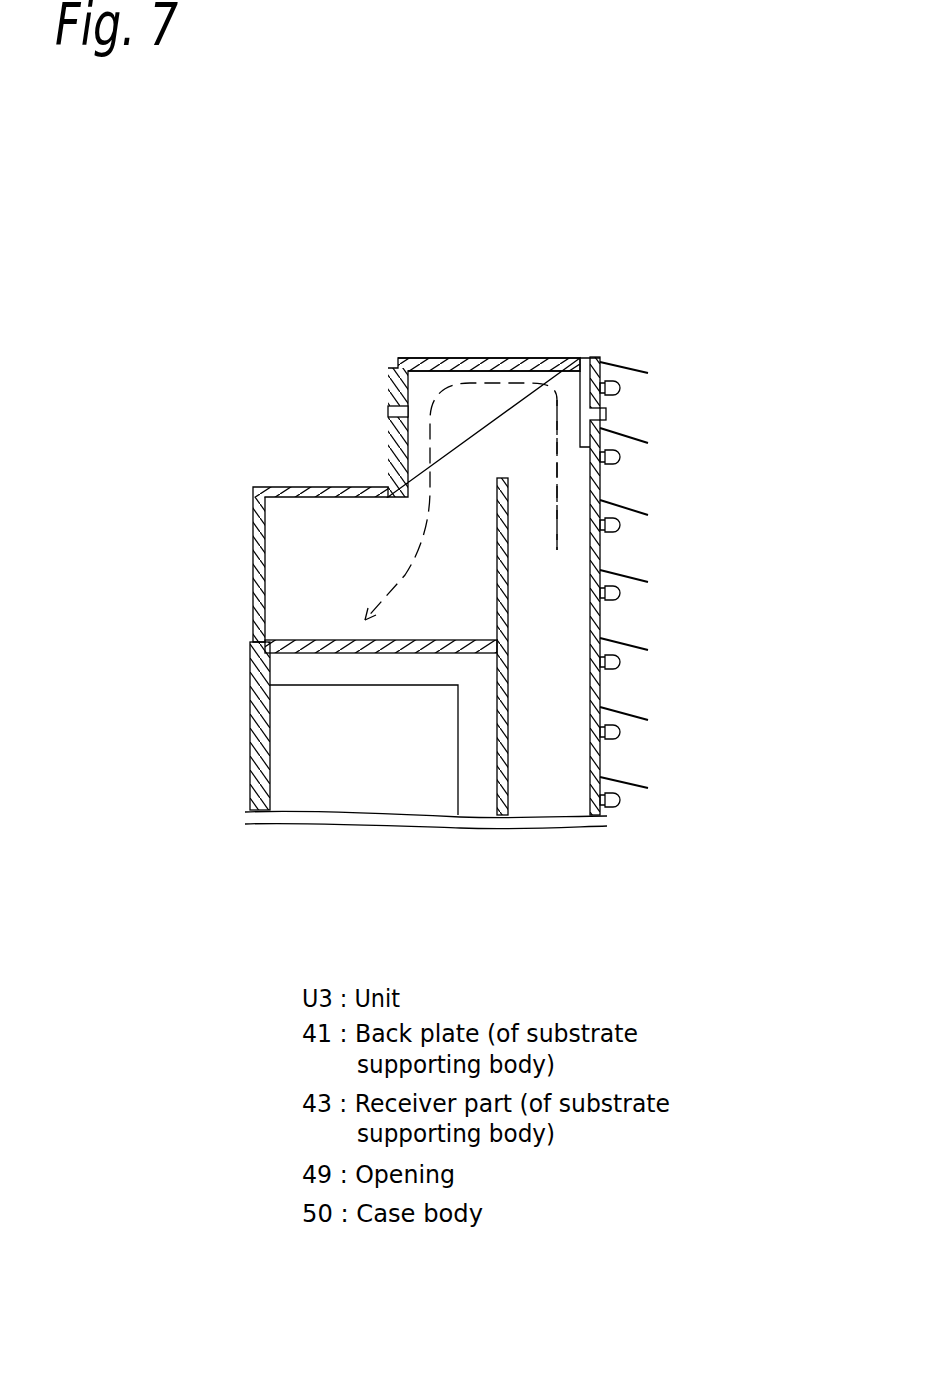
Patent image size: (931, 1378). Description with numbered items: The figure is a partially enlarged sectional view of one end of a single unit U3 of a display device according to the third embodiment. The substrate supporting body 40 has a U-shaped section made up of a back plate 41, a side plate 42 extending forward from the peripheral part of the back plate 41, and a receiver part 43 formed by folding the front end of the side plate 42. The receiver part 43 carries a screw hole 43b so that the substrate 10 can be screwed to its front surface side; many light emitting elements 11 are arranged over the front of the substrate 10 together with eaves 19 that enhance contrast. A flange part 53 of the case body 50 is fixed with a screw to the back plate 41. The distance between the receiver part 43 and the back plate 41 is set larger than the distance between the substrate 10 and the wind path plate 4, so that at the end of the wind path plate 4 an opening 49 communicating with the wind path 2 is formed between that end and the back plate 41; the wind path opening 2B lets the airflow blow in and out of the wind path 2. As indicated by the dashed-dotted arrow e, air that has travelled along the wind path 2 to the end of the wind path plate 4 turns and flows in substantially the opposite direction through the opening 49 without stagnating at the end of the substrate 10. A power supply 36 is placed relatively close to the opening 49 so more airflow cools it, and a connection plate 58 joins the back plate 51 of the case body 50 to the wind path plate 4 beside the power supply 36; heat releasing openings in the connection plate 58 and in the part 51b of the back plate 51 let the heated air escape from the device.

The unit U3 is at (633, 303).
The substrate supporting body 40 is at (413, 241).
The back plate 41 is at (433, 363).
The side plate 42 is at (517, 360).
The receiver part 43 is at (567, 376).
The screw hole 43b is at (600, 413).
The opening 49 is at (467, 500).
The case body 50 is at (253, 532).
The back plate 51 is at (253, 577).
The part 51b is at (250, 750).
The flange part 53 is at (388, 378).
The connection plate 58 is at (333, 640).
The power supply 36 is at (293, 683).
The wind path 2 is at (548, 530).
The wind path opening 2B is at (498, 430).
The wind path plate 4 is at (490, 762).
The substrate 10 is at (585, 768).
The light emitting element 11 is at (628, 663).
The eaves 19 is at (638, 640).
The airflow e is at (461, 501).